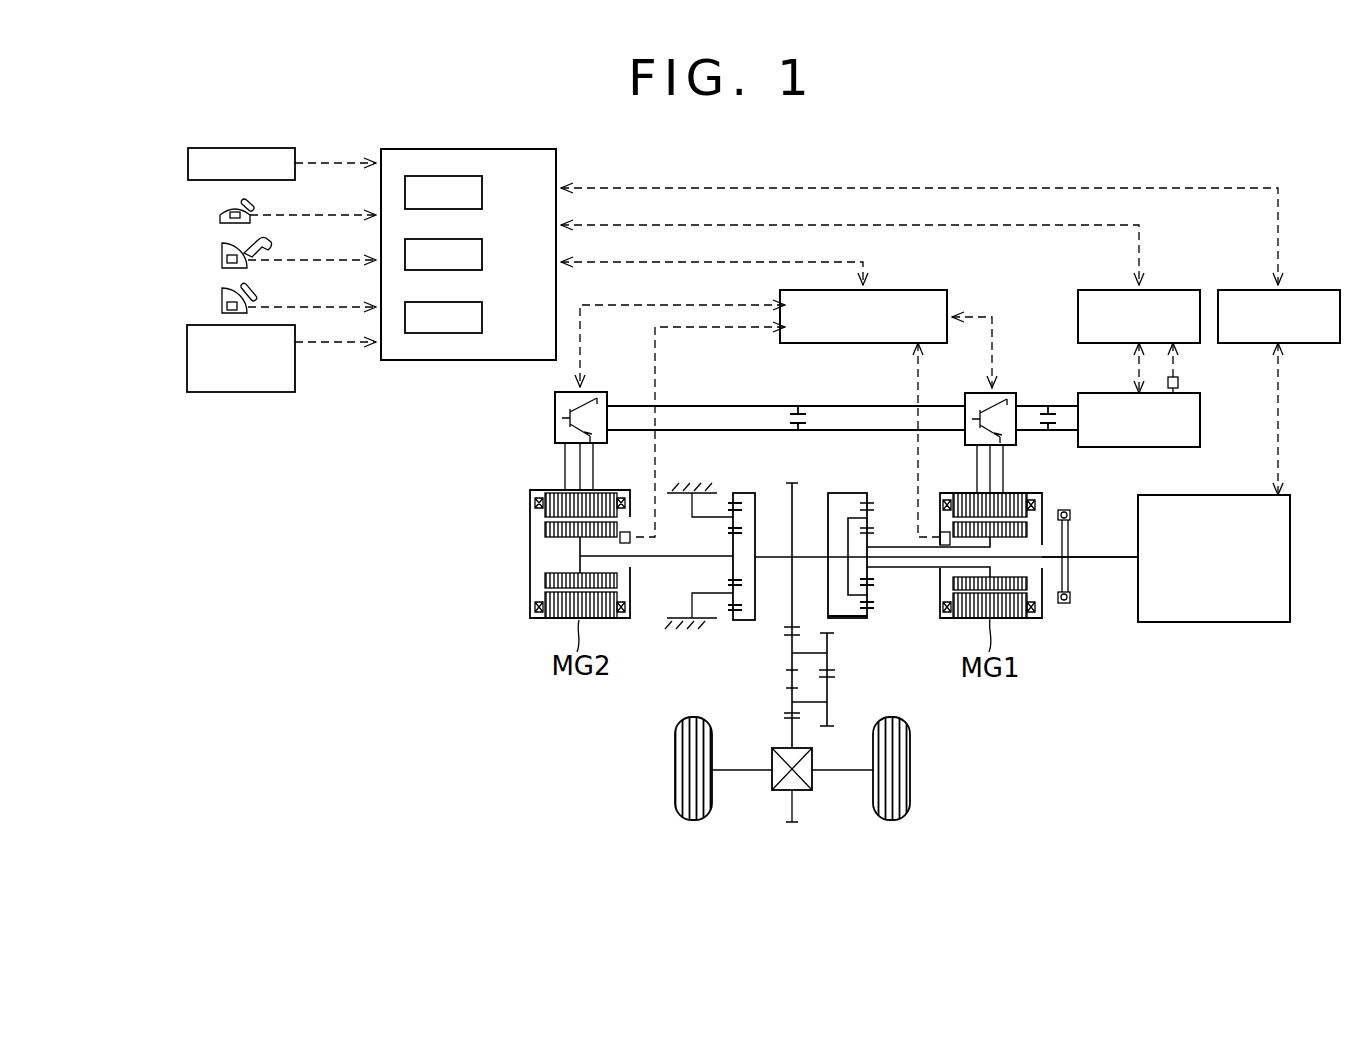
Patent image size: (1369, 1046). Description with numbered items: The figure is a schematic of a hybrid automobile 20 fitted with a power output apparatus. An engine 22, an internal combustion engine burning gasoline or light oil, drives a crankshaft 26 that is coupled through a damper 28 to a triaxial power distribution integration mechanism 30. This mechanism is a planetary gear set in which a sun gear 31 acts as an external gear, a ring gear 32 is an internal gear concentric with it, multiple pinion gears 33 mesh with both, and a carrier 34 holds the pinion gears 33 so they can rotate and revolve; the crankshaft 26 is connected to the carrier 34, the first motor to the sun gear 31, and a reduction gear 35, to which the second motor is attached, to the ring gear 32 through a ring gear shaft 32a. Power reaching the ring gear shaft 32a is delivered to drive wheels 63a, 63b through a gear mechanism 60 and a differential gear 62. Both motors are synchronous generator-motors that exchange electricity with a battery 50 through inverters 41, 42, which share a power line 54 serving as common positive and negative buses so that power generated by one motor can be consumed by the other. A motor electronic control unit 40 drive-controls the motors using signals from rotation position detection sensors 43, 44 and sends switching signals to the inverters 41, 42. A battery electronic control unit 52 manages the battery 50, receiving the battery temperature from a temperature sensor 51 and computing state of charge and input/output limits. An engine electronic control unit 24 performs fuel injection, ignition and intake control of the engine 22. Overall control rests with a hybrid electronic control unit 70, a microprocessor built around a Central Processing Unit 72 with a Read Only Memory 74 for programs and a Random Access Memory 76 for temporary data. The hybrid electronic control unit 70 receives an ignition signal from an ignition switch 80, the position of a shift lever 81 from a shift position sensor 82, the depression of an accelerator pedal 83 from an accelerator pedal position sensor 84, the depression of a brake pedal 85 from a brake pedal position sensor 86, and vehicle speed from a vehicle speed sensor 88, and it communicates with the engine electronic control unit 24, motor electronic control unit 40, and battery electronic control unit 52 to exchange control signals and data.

The hybrid automobile 20 is at (1062, 163).
The engine 22 is at (1218, 622).
The engine electronic control unit 24 is at (1305, 290).
The crankshaft 26 is at (1103, 560).
The damper 28 is at (1065, 605).
The power distribution integration mechanism 30 is at (882, 488).
The sun gear 31 is at (871, 578).
The ring gear 32 is at (868, 617).
The ring gear shaft 32a is at (804, 553).
The pinion gears 33 is at (871, 602).
The carrier 34 is at (860, 514).
The reduction gear 35 is at (742, 488).
The motor electronic control unit 40 is at (915, 290).
The inverter 41 is at (1008, 393).
The inverter 42 is at (600, 392).
The rotation position detection sensor 43 is at (940, 530).
The rotation position detection sensor 44 is at (625, 532).
The battery 50 is at (1140, 447).
The temperature sensor 51 is at (1183, 382).
The battery electronic control unit 52 is at (1165, 290).
The power line 54 is at (828, 430).
The gear mechanism 60 is at (853, 690).
The differential gear 62 is at (812, 778).
The drive wheel 63a is at (675, 769).
The drive wheel 63b is at (910, 769).
The hybrid electronic control unit 70 is at (480, 149).
The Central Processing Unit 72 is at (484, 192).
The Read Only Memory 74 is at (484, 255).
The Random Access Memory 76 is at (484, 318).
The ignition switch 80 is at (188, 163).
The shift lever 81 is at (245, 203).
The shift position sensor 82 is at (222, 216).
The accelerator pedal 83 is at (243, 243).
The accelerator pedal position sensor 84 is at (223, 259).
The brake pedal 85 is at (243, 292).
The brake pedal position sensor 86 is at (223, 307).
The vehicle speed sensor 88 is at (187, 360).